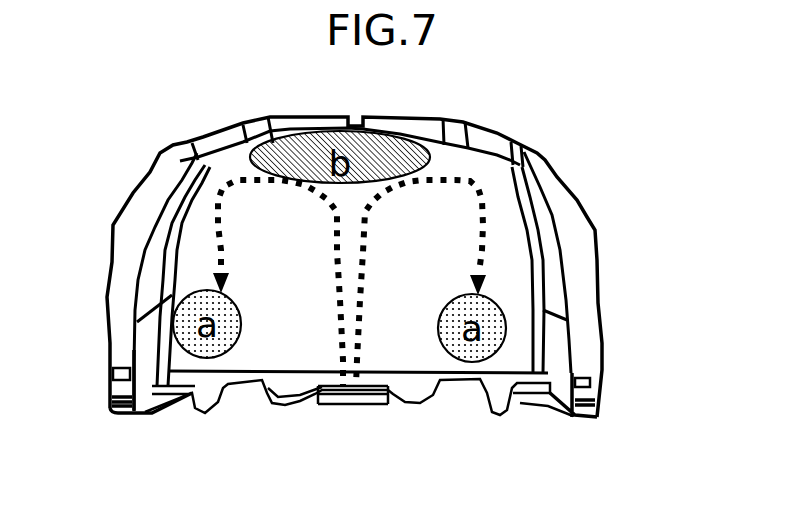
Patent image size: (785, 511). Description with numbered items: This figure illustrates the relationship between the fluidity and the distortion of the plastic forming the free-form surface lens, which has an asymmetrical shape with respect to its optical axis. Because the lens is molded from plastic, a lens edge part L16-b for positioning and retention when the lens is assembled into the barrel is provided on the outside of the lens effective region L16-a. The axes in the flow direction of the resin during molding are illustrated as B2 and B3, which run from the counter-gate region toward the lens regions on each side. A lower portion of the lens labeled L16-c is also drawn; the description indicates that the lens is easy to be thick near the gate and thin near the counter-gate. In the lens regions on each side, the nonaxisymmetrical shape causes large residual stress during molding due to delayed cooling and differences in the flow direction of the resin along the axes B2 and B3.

The lens effective region L16-a is at (193, 230).
The lens edge part L16-b is at (583, 290).
The lower center lamp portion L16-c is at (345, 407).
The axis in the flow direction B3 is at (327, 250).
The axis in the flow direction B2 is at (352, 233).